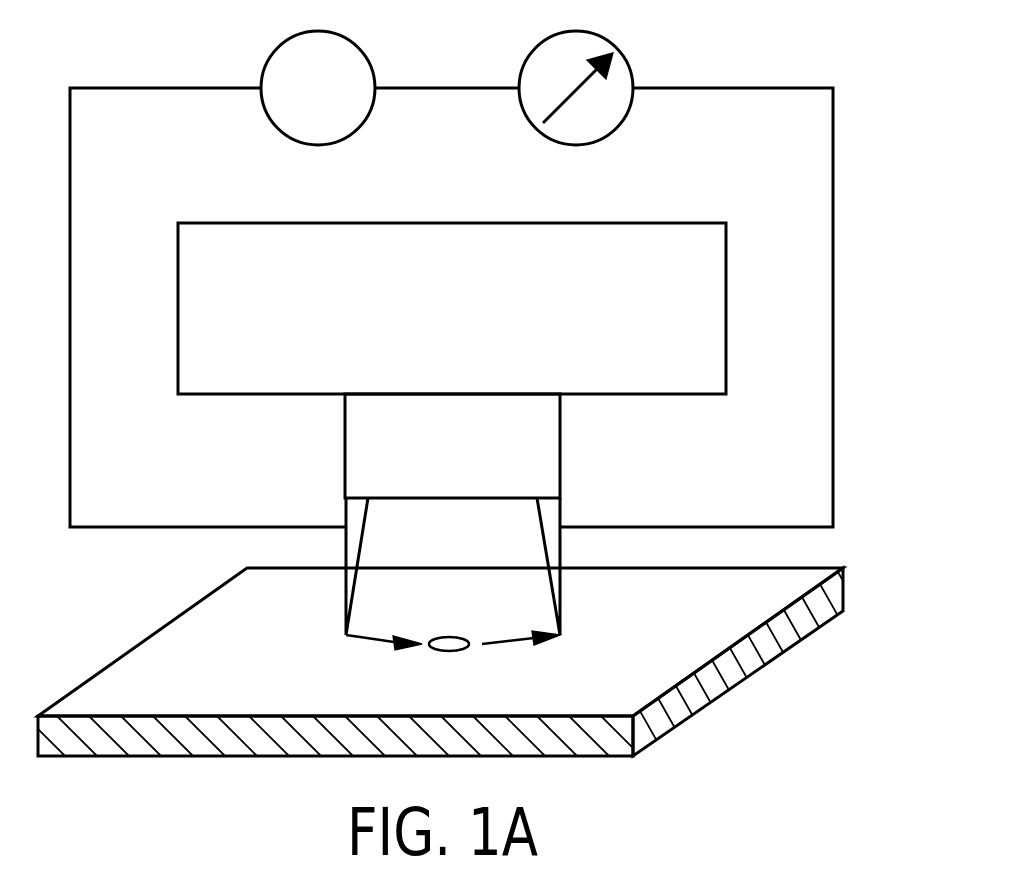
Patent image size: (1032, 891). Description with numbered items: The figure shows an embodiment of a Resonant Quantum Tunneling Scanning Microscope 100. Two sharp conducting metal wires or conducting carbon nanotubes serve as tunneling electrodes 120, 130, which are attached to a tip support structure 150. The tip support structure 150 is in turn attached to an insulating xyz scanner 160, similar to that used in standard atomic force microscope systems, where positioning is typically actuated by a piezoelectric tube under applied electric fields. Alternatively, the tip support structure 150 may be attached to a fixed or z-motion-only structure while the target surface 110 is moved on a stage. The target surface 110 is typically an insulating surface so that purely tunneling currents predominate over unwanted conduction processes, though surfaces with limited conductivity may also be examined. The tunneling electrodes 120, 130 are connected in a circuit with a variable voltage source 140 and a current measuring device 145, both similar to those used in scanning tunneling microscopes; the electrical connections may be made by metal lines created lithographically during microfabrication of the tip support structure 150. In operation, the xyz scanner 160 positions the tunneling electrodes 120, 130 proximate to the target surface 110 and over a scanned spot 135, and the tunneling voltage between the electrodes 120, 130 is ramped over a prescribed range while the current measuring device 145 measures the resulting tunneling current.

The Resonant Quantum Tunneling Scanning Microscope 100 is at (872, 113).
The target surface 110 is at (728, 627).
The tunneling electrode 120 is at (347, 607).
The tunneling electrode 130 is at (560, 612).
The scanned spot 135 is at (451, 637).
The variable voltage source 140 is at (373, 67).
The current measuring device 145 is at (632, 67).
The tip support structure 150 is at (474, 456).
The xyz scanner 160 is at (475, 327).